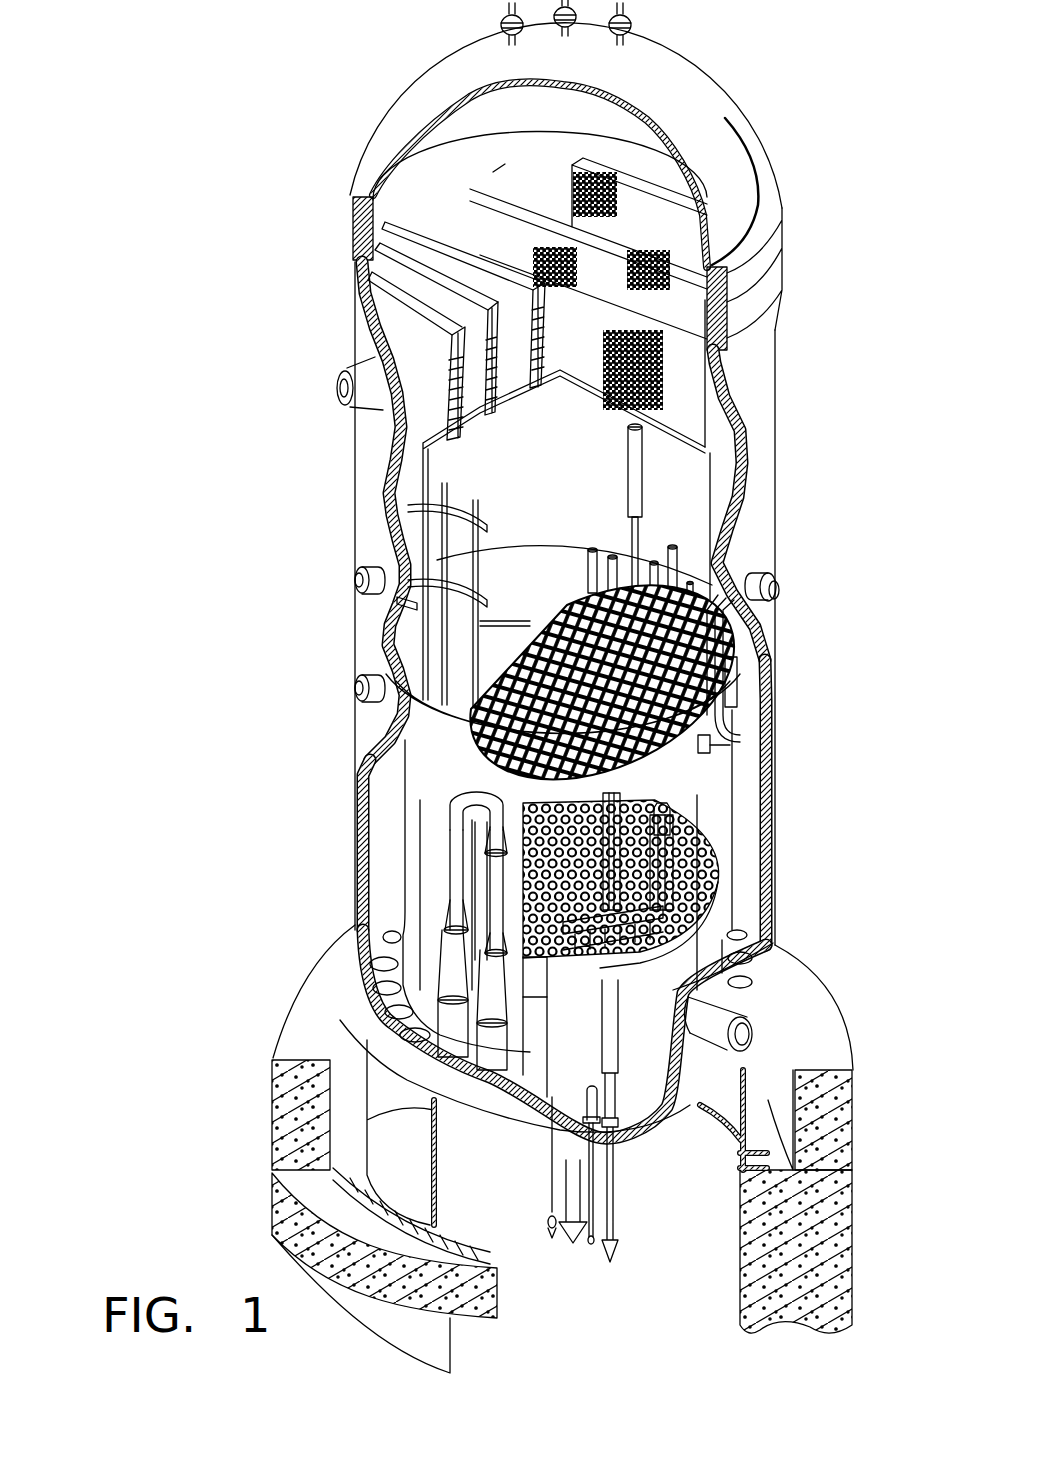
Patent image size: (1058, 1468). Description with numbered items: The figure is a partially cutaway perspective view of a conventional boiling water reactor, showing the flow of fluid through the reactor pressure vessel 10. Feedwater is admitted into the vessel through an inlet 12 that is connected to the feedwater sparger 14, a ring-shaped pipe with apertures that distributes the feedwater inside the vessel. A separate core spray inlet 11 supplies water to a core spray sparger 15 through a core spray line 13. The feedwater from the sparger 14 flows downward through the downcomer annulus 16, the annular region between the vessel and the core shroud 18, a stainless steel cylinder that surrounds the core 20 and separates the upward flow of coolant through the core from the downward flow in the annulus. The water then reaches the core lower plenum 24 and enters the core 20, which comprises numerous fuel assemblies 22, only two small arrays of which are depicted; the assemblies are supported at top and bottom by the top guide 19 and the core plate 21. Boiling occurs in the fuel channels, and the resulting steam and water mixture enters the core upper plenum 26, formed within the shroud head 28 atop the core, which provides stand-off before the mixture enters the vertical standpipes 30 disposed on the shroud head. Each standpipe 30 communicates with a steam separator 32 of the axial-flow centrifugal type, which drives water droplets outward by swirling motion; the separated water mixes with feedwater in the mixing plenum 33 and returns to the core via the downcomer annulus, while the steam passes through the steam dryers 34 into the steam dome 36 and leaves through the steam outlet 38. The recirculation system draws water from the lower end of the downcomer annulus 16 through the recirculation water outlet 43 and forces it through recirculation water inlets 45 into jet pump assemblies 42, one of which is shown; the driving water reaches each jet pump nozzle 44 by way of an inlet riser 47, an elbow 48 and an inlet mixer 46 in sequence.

The reactor pressure vessel 10 is at (353, 912).
The core spray inlet 11 is at (358, 577).
The inlet 12 is at (780, 590).
The core spray line 13 is at (716, 692).
The feedwater sparger 14 is at (733, 582).
The core spray sparger 15 is at (700, 760).
The downcomer annulus 16 is at (373, 883).
The core shroud 18 is at (405, 765).
The top guide 19 is at (732, 640).
The core 20 is at (712, 813).
The core plate 21 is at (712, 880).
The fuel assemblies 22 is at (643, 798).
The core lower plenum 24 is at (636, 1082).
The core upper plenum 26 is at (565, 597).
The shroud head 28 is at (510, 556).
The vertical standpipes 30 is at (613, 557).
The steam separator 32 is at (637, 455).
The mixing plenum 33 is at (599, 485).
The steam dryers 34 is at (568, 322).
The steam dome 36 is at (478, 107).
The steam outlet 38 is at (337, 383).
The jet pump assemblies 42 is at (433, 855).
The recirculation water outlet 43 is at (745, 1035).
The jet pump nozzle 44 is at (453, 1050).
The recirculation water inlets 45 is at (463, 1000).
The inlet mixer 46 is at (453, 840).
The inlet riser 47 is at (473, 897).
The elbow 48 is at (452, 805).